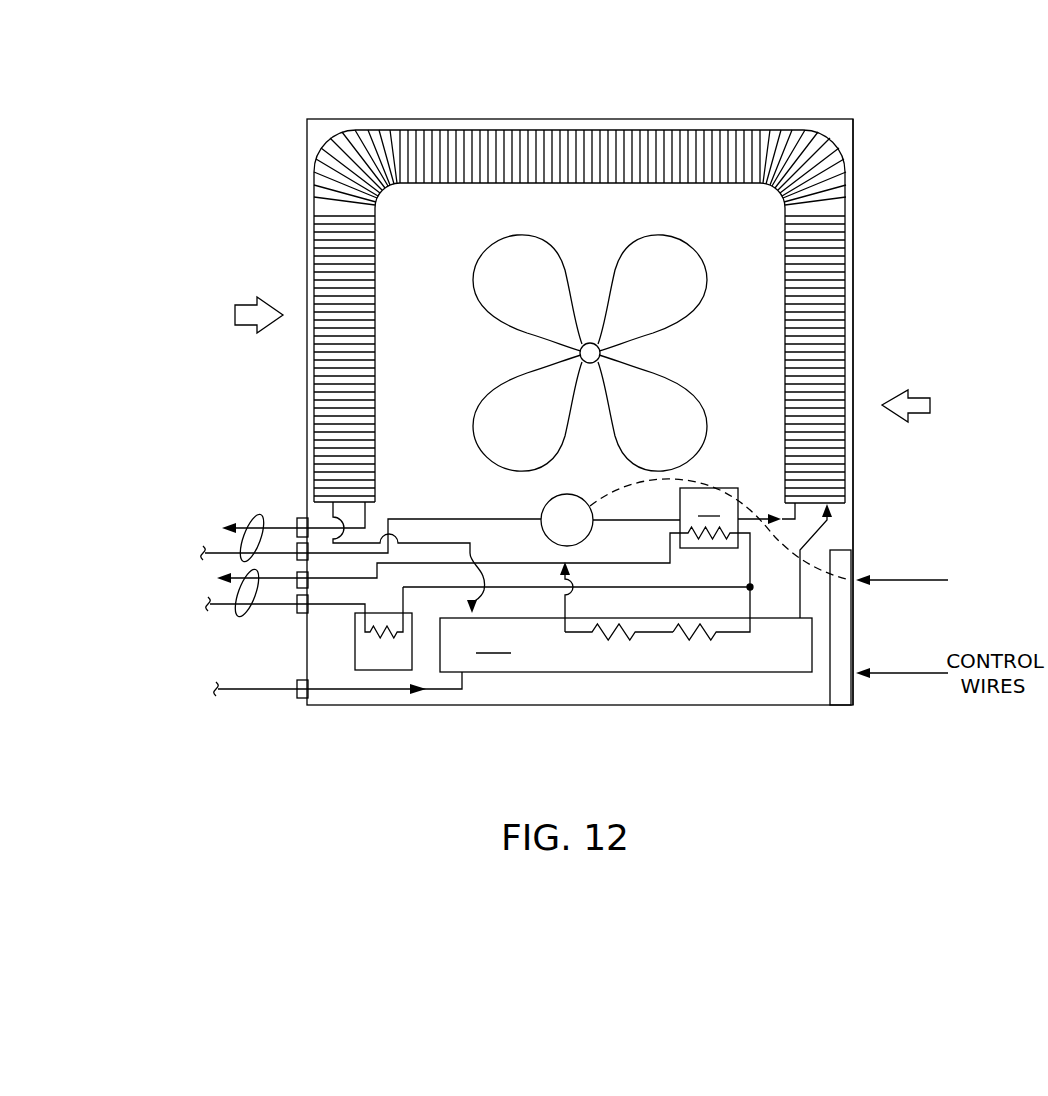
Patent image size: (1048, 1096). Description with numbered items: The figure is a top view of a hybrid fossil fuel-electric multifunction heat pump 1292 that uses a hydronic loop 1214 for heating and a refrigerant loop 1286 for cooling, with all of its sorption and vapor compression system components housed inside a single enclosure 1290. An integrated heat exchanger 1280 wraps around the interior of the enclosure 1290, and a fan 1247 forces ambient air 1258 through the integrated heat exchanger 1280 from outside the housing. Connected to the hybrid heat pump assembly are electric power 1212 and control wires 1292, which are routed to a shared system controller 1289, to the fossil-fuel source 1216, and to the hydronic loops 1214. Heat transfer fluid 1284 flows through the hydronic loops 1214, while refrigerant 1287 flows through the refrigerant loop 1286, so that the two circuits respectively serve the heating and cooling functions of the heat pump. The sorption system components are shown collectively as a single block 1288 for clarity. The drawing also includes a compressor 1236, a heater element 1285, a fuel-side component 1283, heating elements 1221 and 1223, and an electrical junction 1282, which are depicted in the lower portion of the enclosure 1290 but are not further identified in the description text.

The hybrid fossil fuel-electric multifunction heat pump 1292 is at (236, 159).
The ambient air 1258 is at (232, 313).
The integrated heat exchanger 1280 is at (830, 285).
The single enclosure 1290 is at (855, 370).
The fan 1247 is at (687, 262).
The compressor 1236 is at (578, 490).
The heater 1285 is at (712, 553).
The refrigerant loop 1286 is at (258, 517).
The refrigerant 1287 is at (180, 549).
The heat transfer fluid 1284 is at (180, 600).
The hydronic loop 1214 is at (243, 617).
The fossil-fuel source 1216 is at (190, 686).
The fuel heater 1283 is at (382, 672).
The sorption system components 1288 is at (626, 645).
The heating element 1221 is at (598, 636).
The heating element 1223 is at (683, 636).
The electrical junction 1282 is at (752, 590).
The electric power 1212 is at (905, 580).
The shared system controller 1289 is at (843, 693).